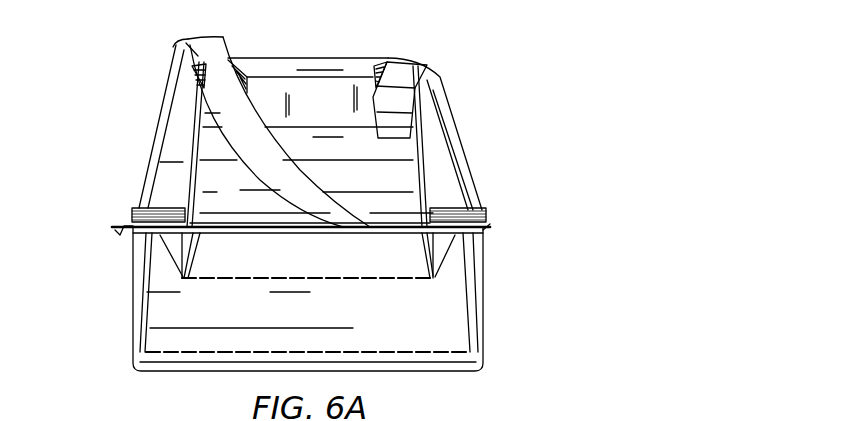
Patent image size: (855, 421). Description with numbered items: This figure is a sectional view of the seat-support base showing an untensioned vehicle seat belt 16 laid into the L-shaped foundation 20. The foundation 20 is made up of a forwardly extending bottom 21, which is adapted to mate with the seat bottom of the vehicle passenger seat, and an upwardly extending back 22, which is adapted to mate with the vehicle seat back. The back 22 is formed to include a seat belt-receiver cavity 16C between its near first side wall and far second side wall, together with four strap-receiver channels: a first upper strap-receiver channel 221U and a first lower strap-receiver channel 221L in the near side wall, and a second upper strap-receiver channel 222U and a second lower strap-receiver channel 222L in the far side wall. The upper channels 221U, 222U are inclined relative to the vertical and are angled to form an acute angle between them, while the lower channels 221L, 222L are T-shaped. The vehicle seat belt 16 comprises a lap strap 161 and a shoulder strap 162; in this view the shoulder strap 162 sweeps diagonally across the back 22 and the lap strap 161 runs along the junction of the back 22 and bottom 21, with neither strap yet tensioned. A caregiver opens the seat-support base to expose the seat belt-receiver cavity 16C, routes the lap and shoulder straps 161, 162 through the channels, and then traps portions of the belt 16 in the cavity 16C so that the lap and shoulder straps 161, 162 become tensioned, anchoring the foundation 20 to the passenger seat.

The L-shaped foundation 20 is at (460, 97).
The bottom 21 is at (490, 303).
The back 22 is at (474, 145).
The vehicle seat belt 16 is at (235, 146).
The seat belt-receiver cavity 16C is at (339, 254).
The lap strap 161 is at (114, 231).
The shoulder strap 162 is at (240, 117).
The first upper strap-receiver channel 221U is at (231, 60).
The second upper strap-receiver channel 222U is at (403, 75).
The first lower strap-receiver channel 221L is at (194, 235).
The second lower strap-receiver channel 222L is at (419, 242).